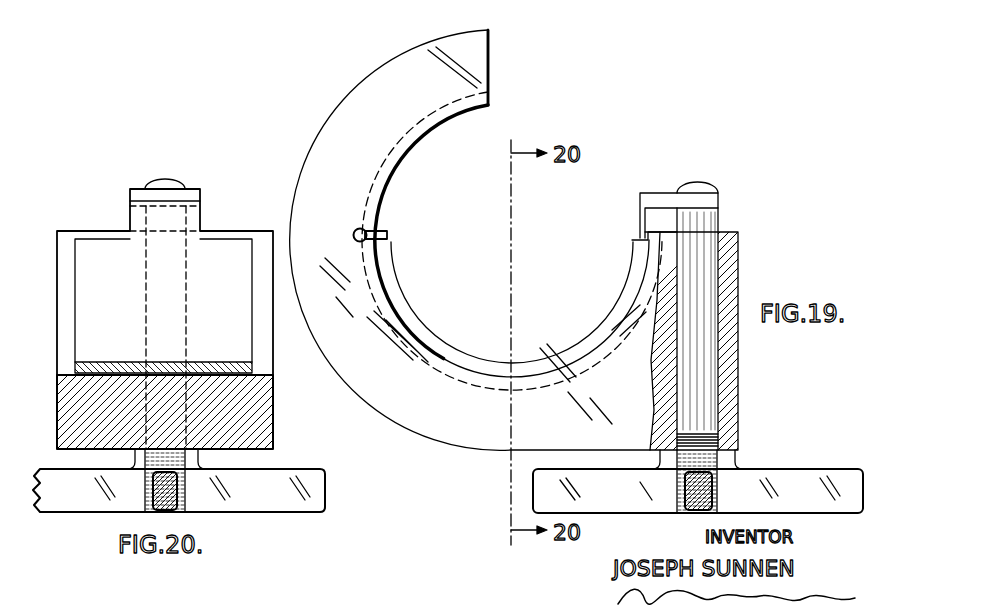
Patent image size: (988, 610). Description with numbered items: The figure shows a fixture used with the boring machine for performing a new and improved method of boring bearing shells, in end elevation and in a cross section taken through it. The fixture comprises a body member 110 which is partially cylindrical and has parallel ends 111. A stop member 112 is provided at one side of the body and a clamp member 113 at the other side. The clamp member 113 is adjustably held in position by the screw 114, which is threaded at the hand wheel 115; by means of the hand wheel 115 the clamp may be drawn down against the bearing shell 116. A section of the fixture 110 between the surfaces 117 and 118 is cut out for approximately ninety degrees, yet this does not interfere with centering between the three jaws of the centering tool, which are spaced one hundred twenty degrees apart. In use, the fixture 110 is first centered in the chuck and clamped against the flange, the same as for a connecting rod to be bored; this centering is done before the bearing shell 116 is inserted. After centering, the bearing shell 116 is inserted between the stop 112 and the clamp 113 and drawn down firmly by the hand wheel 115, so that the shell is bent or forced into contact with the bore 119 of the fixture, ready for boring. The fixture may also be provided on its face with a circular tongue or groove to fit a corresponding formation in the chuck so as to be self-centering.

In FIG. 19, the body member 110 is at (357, 106).
In FIG. 20, the parallel ends 111 is at (273, 254).
In FIG. 19, the stop member 112 is at (384, 232).
In FIG. 19, the clamp member 113 is at (640, 234).
In FIG. 19, the screw 114 is at (712, 226).
In FIG. 19, the hand wheel 115 is at (790, 470).
In FIG. 20, the hand wheel 115 is at (284, 470).
In FIG. 19, the bearing shell 116 is at (610, 318).
In FIG. 19, the surface 117 is at (489, 66).
In FIG. 19, the surface 118 is at (656, 232).
In FIG. 19, the bore 119 is at (417, 138).